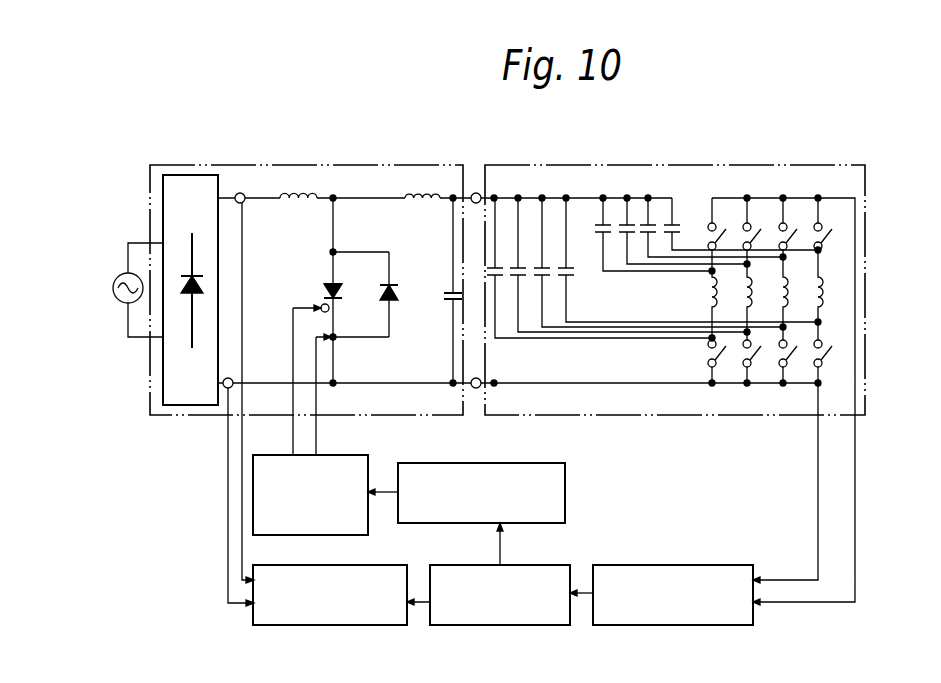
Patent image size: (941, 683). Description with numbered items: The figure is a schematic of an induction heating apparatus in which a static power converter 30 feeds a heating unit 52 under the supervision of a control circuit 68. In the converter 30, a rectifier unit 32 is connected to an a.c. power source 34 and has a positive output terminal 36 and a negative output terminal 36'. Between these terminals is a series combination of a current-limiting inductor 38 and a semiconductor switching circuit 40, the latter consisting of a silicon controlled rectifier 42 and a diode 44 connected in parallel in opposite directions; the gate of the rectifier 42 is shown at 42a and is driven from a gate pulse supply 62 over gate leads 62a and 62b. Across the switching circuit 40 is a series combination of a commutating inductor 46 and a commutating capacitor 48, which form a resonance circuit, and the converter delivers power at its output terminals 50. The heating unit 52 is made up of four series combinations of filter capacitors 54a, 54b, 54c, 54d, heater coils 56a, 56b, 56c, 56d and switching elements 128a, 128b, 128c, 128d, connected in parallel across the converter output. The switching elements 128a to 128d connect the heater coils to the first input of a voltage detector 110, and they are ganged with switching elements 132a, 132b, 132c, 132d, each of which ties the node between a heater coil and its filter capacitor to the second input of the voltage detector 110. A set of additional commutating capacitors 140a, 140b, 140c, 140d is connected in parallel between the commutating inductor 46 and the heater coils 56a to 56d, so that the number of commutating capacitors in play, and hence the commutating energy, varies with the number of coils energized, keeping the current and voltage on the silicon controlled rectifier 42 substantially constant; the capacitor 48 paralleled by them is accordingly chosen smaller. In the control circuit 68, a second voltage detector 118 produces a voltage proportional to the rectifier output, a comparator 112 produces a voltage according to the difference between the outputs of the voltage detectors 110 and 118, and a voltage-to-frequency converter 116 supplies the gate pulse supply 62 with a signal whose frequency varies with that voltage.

The static power converter 30 is at (176, 160).
The rectifier unit 32 is at (224, 268).
The a.c. power source 34 is at (114, 282).
The positive output terminal 36 is at (249, 377).
The negative output terminal 36' is at (275, 474).
The current-limiting inductor 38 is at (294, 204).
The semiconductor switching circuit 40 is at (377, 333).
The silicon controlled rectifier 42 is at (325, 290).
The gate electrode 42a is at (311, 310).
The diode 44 is at (396, 291).
The commutating inductor 46 is at (419, 204).
The commutating capacitor 48 is at (450, 300).
The positive output terminal of the power converter 50 is at (475, 192).
The heating unit 52 is at (824, 160).
The filter capacitor 54a is at (600, 221).
The filter capacitor 54b is at (624, 221).
The filter capacitor 54c is at (646, 221).
The filter capacitor 54d is at (670, 221).
The heater coil 56a is at (709, 289).
The heater coil 56b is at (744, 300).
The heater coil 56c is at (791, 286).
The heater coil 56d is at (826, 303).
The gate pulse supply 62 is at (330, 455).
The gate lead 62a is at (291, 398).
The gate lead 62b is at (317, 400).
The control circuit 68 is at (604, 518).
The voltage detector 110 is at (680, 626).
The comparator 112 is at (507, 626).
The voltage-to-frequency converter 116 is at (565, 463).
The voltage detector 118 is at (335, 626).
The switching element 128a is at (703, 352).
The switching element 128b is at (741, 358).
The switching element 128c is at (778, 358).
The switching element 128d is at (812, 360).
The switching element 132a is at (710, 240).
The switching element 132b is at (758, 230).
The switching element 132c is at (792, 230).
The switching element 132d is at (832, 232).
The additional commutating capacitor 140a is at (497, 287).
The additional commutating capacitor 140b is at (520, 287).
The additional commutating capacitor 140c is at (545, 263).
The additional commutating capacitor 140d is at (569, 285).